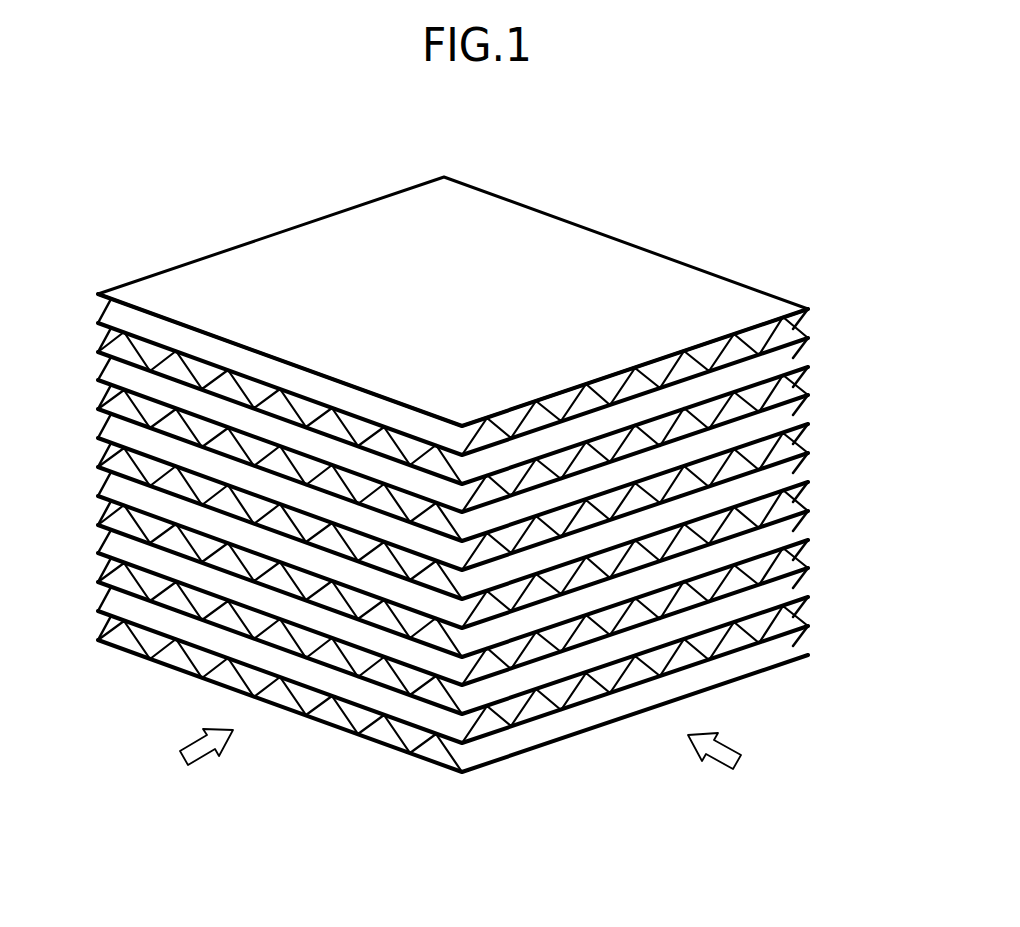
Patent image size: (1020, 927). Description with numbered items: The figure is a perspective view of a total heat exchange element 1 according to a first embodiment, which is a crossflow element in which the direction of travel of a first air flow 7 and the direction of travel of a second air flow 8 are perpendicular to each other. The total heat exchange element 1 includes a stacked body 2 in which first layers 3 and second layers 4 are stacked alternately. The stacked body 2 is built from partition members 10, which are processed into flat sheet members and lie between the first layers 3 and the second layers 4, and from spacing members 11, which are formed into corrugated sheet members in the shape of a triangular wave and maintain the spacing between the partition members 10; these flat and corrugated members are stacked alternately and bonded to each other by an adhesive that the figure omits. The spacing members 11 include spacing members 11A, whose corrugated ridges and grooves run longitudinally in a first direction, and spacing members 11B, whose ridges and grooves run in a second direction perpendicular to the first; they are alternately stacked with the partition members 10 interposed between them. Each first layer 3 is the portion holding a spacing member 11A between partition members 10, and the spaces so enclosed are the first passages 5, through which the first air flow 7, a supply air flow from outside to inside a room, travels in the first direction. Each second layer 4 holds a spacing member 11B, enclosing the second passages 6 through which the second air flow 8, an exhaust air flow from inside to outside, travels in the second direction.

The total heat exchange element 1 is at (631, 202).
The stacked body 2 is at (60, 288).
The first layer 3 is at (101, 620).
The second layer 4 is at (807, 629).
The first passage 5 is at (123, 638).
The second passage 6 is at (490, 723).
The first air flow 7 is at (206, 765).
The second air flow 8 is at (723, 768).
The partition member 10 is at (792, 306).
The spacing member 11 is at (886, 330).
The spacing member 11A is at (796, 367).
The spacing member 11B is at (800, 392).